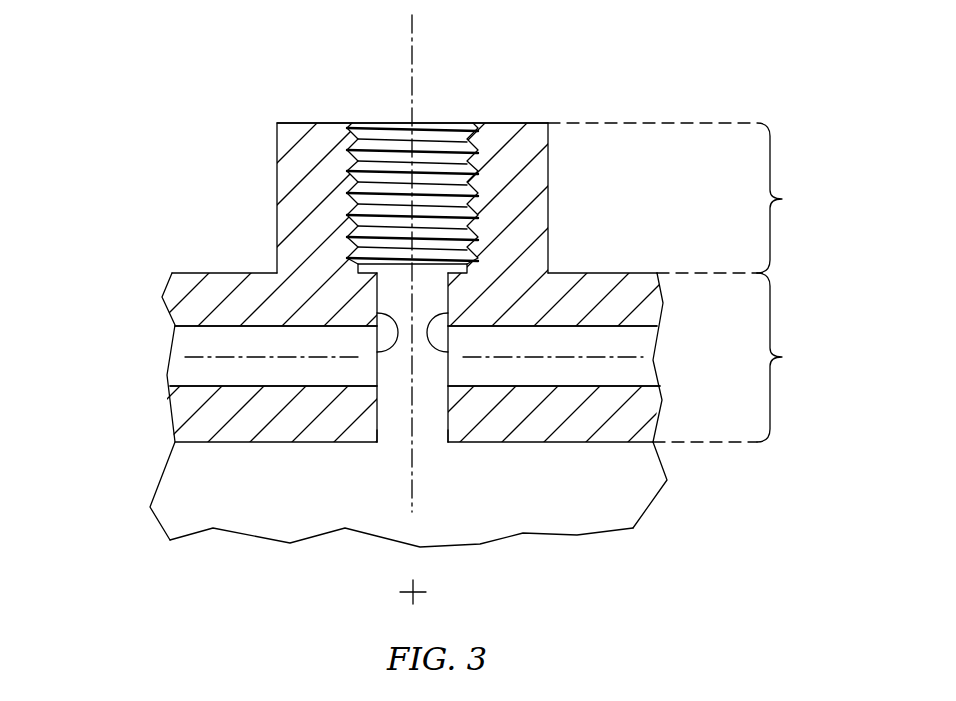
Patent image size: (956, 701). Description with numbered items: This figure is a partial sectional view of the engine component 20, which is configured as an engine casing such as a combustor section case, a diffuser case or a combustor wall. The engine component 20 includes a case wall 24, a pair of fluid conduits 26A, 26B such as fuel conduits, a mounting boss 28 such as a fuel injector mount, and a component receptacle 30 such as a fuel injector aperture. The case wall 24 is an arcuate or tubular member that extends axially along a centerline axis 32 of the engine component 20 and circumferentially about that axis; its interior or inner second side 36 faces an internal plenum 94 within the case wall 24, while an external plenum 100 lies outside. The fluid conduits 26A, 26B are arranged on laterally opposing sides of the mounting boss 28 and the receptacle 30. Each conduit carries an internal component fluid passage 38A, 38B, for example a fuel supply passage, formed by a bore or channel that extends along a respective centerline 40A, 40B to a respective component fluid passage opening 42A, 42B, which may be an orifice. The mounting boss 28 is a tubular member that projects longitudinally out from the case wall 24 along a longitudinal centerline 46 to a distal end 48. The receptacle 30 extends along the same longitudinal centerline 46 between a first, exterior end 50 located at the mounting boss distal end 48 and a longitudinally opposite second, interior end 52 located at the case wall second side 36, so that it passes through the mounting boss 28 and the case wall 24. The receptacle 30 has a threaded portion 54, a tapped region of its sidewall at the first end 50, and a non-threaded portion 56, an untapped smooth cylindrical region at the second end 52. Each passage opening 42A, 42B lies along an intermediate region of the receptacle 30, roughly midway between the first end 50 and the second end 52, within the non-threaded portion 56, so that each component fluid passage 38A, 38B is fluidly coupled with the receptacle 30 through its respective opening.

The engine component 20 is at (130, 74).
The external plenum 100 is at (190, 83).
The case wall 24 is at (142, 419).
The fluid conduit 26A is at (190, 262).
The fluid conduit 26B is at (636, 262).
The mounting boss 28 is at (258, 172).
The component receptacle 30 is at (388, 444).
The centerline axis 32 is at (416, 594).
The second side 36 is at (188, 443).
The component fluid passage 38A is at (188, 347).
The component fluid passage 38B is at (640, 367).
The centerline 40A is at (223, 357).
The centerline 40B is at (555, 357).
The component fluid passage opening 42A is at (377, 315).
The component fluid passage opening 42B is at (441, 320).
The longitudinal centerline 46 is at (407, 28).
The distal end 48 is at (506, 122).
The first end 50 is at (371, 122).
The second end 52 is at (389, 430).
The threaded portion 54 is at (683, 198).
The non-threaded portion 56 is at (735, 357).
The internal plenum 94 is at (627, 497).